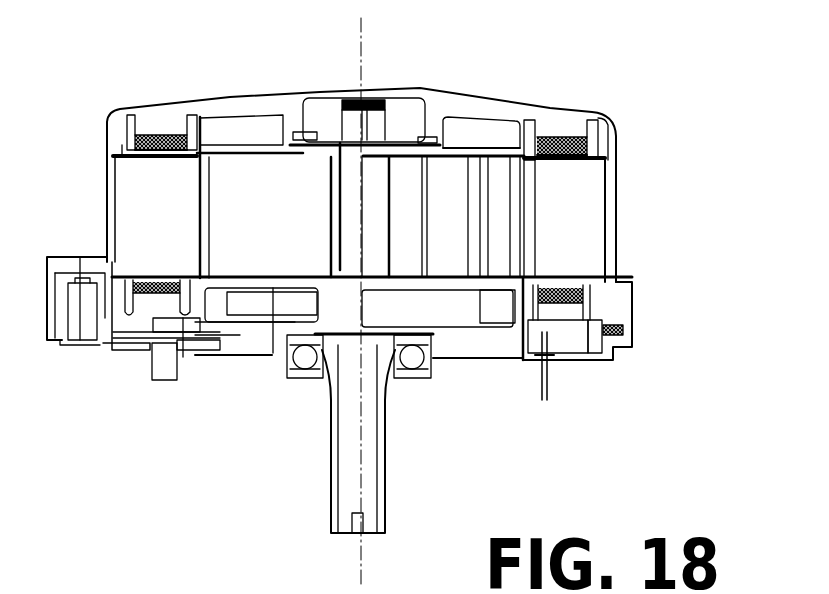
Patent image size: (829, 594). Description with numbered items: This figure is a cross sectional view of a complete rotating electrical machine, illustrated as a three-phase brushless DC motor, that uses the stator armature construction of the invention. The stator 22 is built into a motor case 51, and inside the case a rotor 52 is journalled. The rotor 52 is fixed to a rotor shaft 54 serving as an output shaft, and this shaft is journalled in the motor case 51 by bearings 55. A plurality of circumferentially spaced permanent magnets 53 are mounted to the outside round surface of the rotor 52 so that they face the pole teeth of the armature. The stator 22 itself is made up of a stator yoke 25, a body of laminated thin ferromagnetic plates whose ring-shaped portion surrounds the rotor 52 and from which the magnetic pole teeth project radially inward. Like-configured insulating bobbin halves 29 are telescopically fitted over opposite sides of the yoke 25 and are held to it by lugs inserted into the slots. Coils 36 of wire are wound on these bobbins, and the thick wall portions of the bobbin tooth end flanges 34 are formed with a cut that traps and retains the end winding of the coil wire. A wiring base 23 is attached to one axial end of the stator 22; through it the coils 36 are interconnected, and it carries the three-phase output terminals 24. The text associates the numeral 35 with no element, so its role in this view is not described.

The stator 22 is at (608, 245).
The wiring base 23 is at (585, 360).
The output terminals 24 is at (540, 382).
The stator yoke 25 is at (592, 200).
The insulating bobbin halves 29 is at (596, 138).
The bobbin tooth end flanges 34 is at (533, 125).
The rotor yoke 35 is at (600, 113).
The coils 36 is at (571, 128).
The motor case 51 is at (267, 102).
The rotor 52 is at (286, 257).
The permanent magnets 53 is at (200, 218).
The rotor shaft 54 is at (330, 480).
The bearings 55 is at (398, 120).